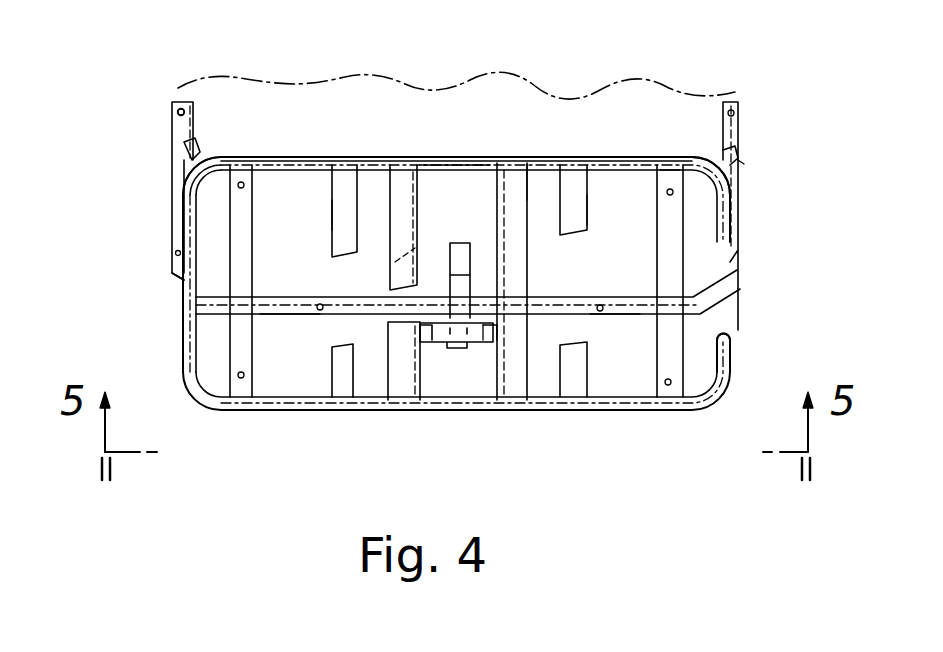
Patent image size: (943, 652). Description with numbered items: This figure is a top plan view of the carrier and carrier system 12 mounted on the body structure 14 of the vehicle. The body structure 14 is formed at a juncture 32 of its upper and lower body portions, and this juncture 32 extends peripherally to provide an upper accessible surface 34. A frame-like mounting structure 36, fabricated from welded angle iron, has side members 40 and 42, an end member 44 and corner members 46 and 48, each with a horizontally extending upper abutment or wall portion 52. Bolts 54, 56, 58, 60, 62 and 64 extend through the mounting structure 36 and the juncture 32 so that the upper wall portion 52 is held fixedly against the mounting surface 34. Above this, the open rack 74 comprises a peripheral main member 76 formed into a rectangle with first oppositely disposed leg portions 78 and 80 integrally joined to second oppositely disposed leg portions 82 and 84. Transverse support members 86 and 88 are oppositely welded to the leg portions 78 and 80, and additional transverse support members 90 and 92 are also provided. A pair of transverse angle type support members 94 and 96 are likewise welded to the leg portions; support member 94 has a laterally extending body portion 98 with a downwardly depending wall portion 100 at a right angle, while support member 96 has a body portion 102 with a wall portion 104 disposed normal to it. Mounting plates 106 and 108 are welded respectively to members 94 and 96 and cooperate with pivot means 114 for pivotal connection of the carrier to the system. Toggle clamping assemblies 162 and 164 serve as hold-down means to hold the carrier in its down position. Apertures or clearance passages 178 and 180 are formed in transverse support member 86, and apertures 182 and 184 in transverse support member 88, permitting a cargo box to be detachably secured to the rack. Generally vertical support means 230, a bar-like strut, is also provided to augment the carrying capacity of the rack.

The carrier and carrier system 12 is at (547, 432).
The body structure 14 is at (330, 78).
The juncture 32 is at (178, 90).
The upper disposed accessible surface 34 is at (180, 86).
The mounting structure 36 is at (282, 318).
The side member 40 is at (180, 172).
The side member 42 is at (740, 190).
The end member 44 is at (613, 317).
The corner member 46 is at (175, 281).
The corner member 48 is at (740, 283).
The upper abutment or wall portion 52 is at (565, 303).
The bolt 54 is at (188, 112).
The bolt 56 is at (175, 253).
The bolt 58 is at (317, 305).
The bolt 60 is at (601, 305).
The bolt 62 is at (740, 249).
The bolt 64 is at (740, 119).
The rack 74 is at (177, 354).
The peripheral main member 76 is at (365, 408).
The first leg portion 78 is at (615, 410).
The first leg portion 80 is at (435, 157).
The second leg portion 82 is at (188, 308).
The second leg portion 84 is at (732, 346).
The transverse support member 86 is at (196, 212).
The transverse support member 88 is at (657, 193).
The additional transverse support member 90 is at (340, 205).
The additional transverse support member 92 is at (582, 212).
The transverse angle type support member 94 is at (375, 157).
The transverse angle type support member 96 is at (555, 157).
The support body portion 98 is at (403, 157).
The wall portion 100 is at (395, 262).
The support body portion 102 is at (507, 157).
The wall portion 104 is at (528, 160).
The mounting plate 106 is at (432, 342).
The mounting plate 108 is at (483, 352).
The pivot means 114 is at (443, 345).
The toggle clamping assembly 162 is at (185, 150).
The toggle clamping assembly 164 is at (740, 160).
The aperture 178 is at (238, 378).
The aperture 180 is at (243, 182).
The aperture 182 is at (668, 385).
The aperture 184 is at (672, 190).
The vertical support means 230 is at (482, 207).